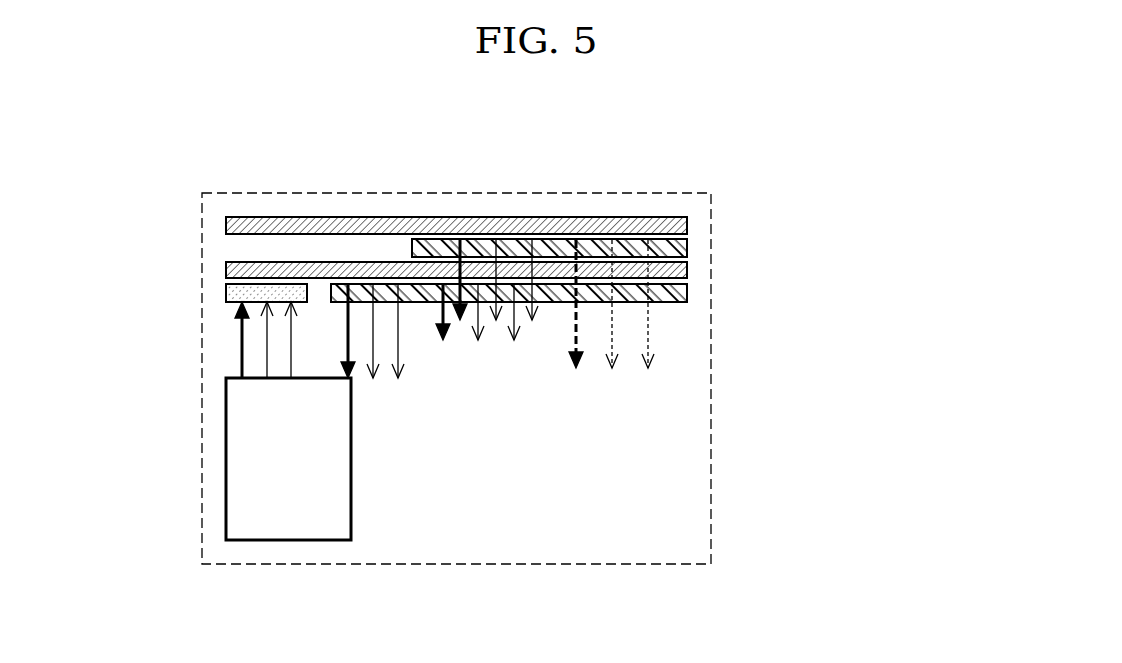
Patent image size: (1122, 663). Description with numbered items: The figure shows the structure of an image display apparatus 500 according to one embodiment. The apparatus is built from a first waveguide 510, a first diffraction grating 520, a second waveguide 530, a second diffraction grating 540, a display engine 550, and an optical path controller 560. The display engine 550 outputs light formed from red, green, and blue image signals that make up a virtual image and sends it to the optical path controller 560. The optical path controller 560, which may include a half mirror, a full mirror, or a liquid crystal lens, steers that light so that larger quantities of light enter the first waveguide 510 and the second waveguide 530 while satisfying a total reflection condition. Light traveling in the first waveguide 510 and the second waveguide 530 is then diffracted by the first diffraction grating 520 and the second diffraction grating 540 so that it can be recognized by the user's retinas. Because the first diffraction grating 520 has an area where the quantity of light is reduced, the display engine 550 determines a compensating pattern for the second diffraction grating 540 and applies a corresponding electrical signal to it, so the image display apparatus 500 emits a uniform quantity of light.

The image display apparatus 500 is at (642, 195).
The first waveguide 510 is at (687, 271).
The first diffraction grating 520 is at (687, 295).
The second waveguide 530 is at (687, 222).
The second diffraction grating 540 is at (687, 247).
The display engine 550 is at (288, 459).
The optical path controller 560 is at (226, 292).